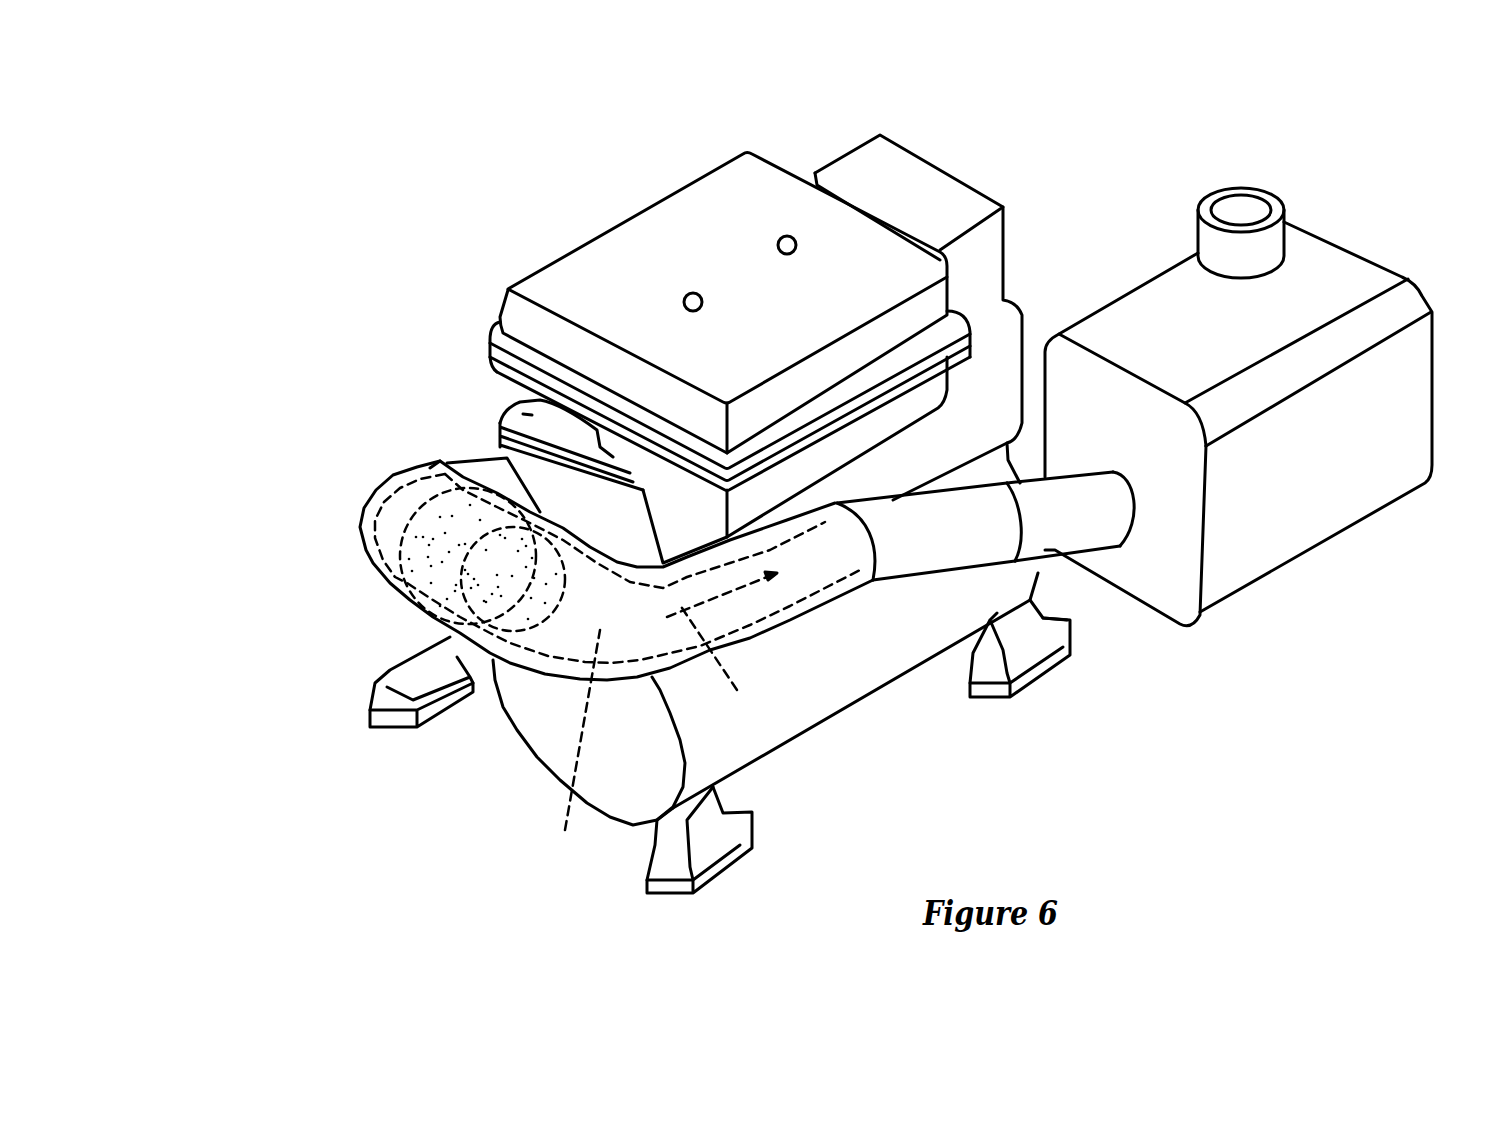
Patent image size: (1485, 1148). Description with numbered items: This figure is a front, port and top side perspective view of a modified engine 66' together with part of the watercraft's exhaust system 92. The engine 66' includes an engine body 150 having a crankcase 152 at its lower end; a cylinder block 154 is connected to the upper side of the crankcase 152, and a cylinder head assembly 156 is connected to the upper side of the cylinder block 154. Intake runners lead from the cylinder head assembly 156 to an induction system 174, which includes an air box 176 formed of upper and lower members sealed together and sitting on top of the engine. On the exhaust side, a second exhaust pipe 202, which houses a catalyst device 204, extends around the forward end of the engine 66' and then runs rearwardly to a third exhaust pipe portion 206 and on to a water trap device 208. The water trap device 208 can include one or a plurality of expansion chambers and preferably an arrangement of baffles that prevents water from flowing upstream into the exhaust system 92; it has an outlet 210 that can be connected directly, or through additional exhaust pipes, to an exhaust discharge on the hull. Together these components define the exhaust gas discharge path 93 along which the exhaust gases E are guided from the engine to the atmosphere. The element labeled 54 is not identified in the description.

The compressor assembly 54 is at (214, 375).
The engine 66' is at (1327, 711).
The exhaust system 92 is at (331, 493).
The exhaust gas discharge path 93 is at (572, 751).
The engine body 150 is at (900, 645).
The crankcase 152 is at (857, 705).
The cylinder block 154 is at (1012, 343).
The cylinder head assembly 156 is at (520, 402).
The induction system 174 is at (548, 258).
The air box 176 is at (640, 253).
The second exhaust pipe 202 is at (400, 600).
The catalyst device 204 is at (466, 491).
The third exhaust pipe portion 206 is at (817, 585).
The water trap device 208 is at (1322, 512).
The outlet 210 is at (1265, 192).
The exhaust gases E is at (722, 648).